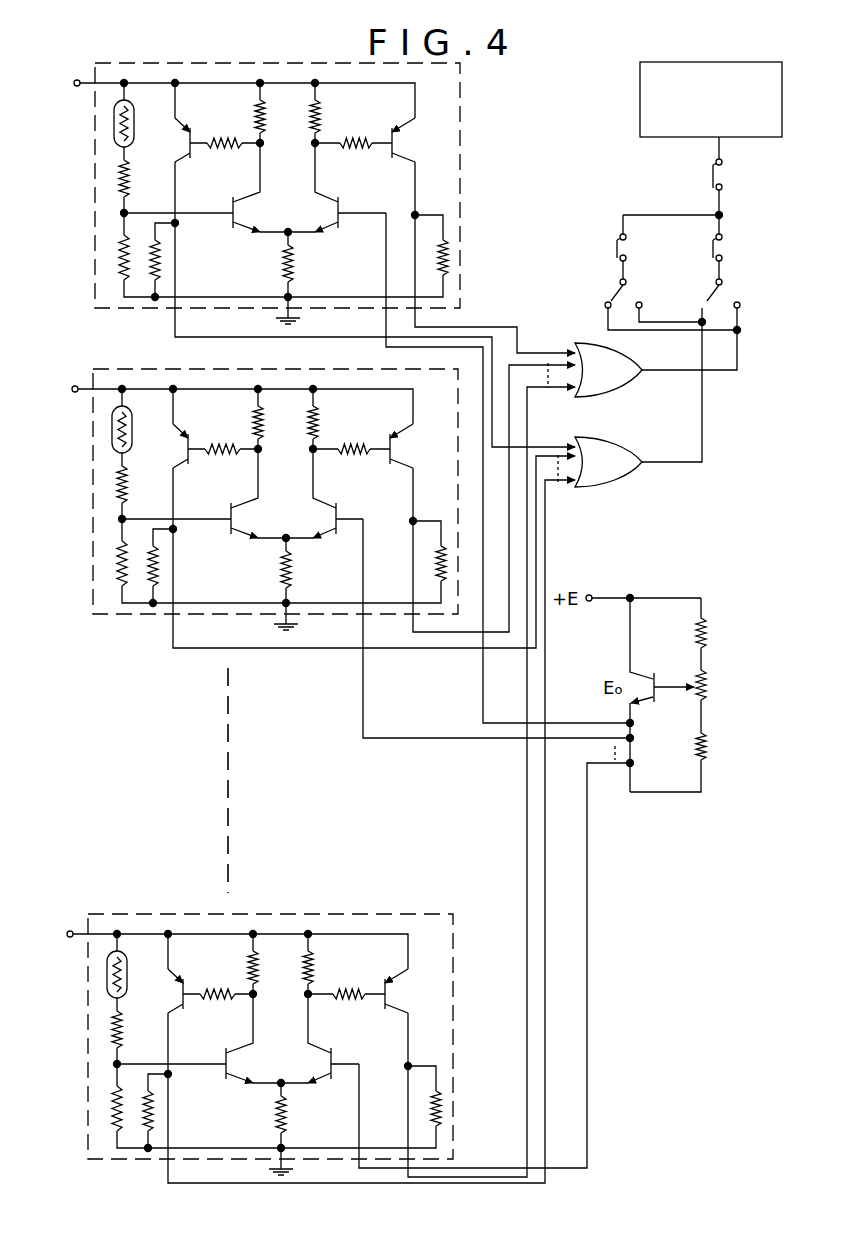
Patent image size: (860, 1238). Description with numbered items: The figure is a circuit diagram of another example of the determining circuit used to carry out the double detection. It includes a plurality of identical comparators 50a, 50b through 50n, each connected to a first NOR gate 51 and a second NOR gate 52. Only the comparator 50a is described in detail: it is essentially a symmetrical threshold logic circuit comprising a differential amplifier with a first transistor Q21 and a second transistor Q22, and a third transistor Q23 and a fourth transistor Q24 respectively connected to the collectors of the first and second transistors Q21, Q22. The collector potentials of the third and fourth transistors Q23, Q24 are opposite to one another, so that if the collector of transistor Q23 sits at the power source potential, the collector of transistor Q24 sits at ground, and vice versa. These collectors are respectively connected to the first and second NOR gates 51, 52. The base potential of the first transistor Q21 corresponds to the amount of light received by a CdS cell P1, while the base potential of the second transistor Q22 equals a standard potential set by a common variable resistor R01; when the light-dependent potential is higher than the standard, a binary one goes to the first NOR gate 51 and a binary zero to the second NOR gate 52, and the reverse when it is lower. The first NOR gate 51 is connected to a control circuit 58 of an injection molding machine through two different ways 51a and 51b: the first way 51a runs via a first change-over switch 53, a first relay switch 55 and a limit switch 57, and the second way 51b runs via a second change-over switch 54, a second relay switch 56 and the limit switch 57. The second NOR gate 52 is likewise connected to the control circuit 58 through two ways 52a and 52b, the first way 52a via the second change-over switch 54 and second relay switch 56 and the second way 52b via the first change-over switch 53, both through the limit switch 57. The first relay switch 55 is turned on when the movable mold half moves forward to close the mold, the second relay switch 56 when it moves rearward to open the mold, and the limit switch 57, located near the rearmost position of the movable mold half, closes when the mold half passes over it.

The comparator 50a is at (460, 113).
The comparator 50b is at (125, 618).
The comparator 50n is at (154, 913).
The first NOR gate 51 is at (612, 487).
The first way 51a is at (700, 324).
The second way 51b is at (643, 309).
The second NOR gate 52 is at (612, 397).
The first way 52a is at (596, 312).
The second way 52b is at (744, 300).
The first change-over switch 53 is at (712, 288).
The second change-over switch 54 is at (610, 288).
The first relay switch 55 is at (714, 238).
The second relay switch 56 is at (614, 238).
The limit switch 57 is at (709, 165).
The control circuit 58 is at (638, 101).
The CdS cell P1 is at (135, 114).
The first transistor Q21 is at (246, 201).
The second transistor Q22 is at (322, 201).
The third transistor Q23 is at (194, 136).
The fourth transistor Q24 is at (420, 140).
The variable resistor R01 is at (691, 695).